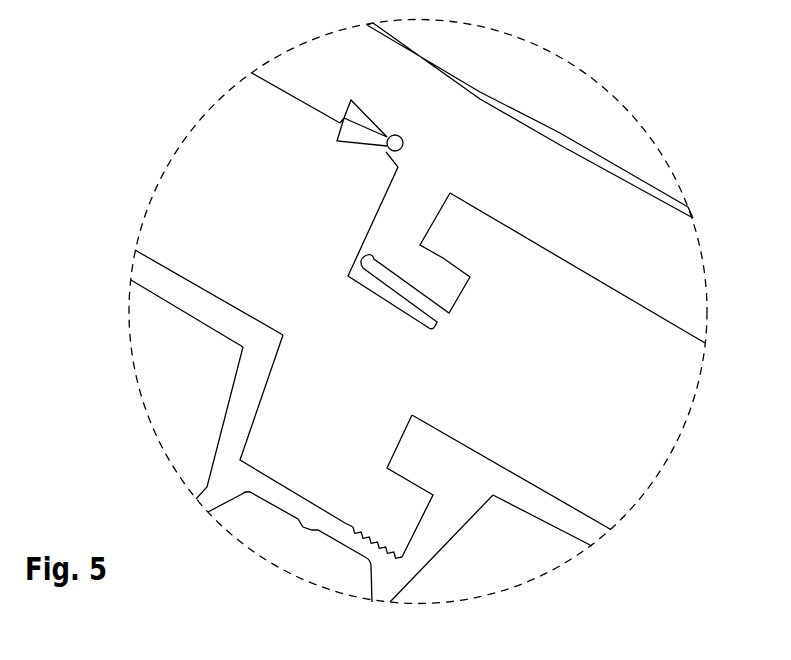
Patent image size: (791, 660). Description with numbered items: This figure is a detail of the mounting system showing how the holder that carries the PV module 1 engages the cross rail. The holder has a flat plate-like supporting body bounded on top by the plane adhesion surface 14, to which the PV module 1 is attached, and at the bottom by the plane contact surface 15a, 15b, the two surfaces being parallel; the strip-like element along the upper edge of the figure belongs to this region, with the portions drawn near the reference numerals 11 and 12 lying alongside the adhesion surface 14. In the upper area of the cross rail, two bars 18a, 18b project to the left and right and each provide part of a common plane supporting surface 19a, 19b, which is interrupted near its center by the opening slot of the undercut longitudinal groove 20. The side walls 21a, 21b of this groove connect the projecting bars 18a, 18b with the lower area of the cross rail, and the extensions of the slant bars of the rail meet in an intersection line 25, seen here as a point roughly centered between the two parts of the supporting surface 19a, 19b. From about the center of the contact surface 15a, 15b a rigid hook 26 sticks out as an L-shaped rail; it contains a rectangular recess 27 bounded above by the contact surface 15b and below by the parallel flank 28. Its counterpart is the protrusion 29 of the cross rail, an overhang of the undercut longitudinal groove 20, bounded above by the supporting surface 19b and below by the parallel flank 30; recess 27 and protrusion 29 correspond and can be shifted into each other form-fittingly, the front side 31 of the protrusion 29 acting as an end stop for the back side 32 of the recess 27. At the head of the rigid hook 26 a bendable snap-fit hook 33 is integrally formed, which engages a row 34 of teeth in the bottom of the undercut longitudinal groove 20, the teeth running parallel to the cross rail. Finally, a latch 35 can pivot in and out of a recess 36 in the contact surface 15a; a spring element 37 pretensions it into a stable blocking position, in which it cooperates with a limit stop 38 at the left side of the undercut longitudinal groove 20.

The PV module 1 is at (501, 70).
The upper wall 11 is at (490, 106).
The lower wall 12 is at (613, 168).
The adhesion surface 14 is at (559, 137).
The contact surface 15a is at (289, 103).
The contact surface 15b is at (662, 321).
The bar 18a is at (208, 317).
The bar 18b is at (533, 508).
The supporting surface 19a is at (210, 292).
The supporting surface 19b is at (554, 494).
The undercut longitudinal groove 20 is at (336, 427).
The side wall 21a is at (233, 420).
The side wall 21b is at (437, 540).
The intersection line 25 is at (395, 393).
The rigid hook 26 is at (385, 229).
The recess 27 is at (474, 249).
The flank 28 is at (443, 258).
The protrusion 29 is at (420, 460).
The flank 30 is at (414, 482).
The front side 31 is at (398, 436).
The back side 32 is at (437, 219).
The snap-fit hook 33 is at (399, 304).
The row of teeth 34 is at (371, 526).
The latch 35 is at (355, 133).
The recess 36 is at (362, 116).
The spring element 37 is at (361, 109).
The limit stop 38 is at (275, 352).